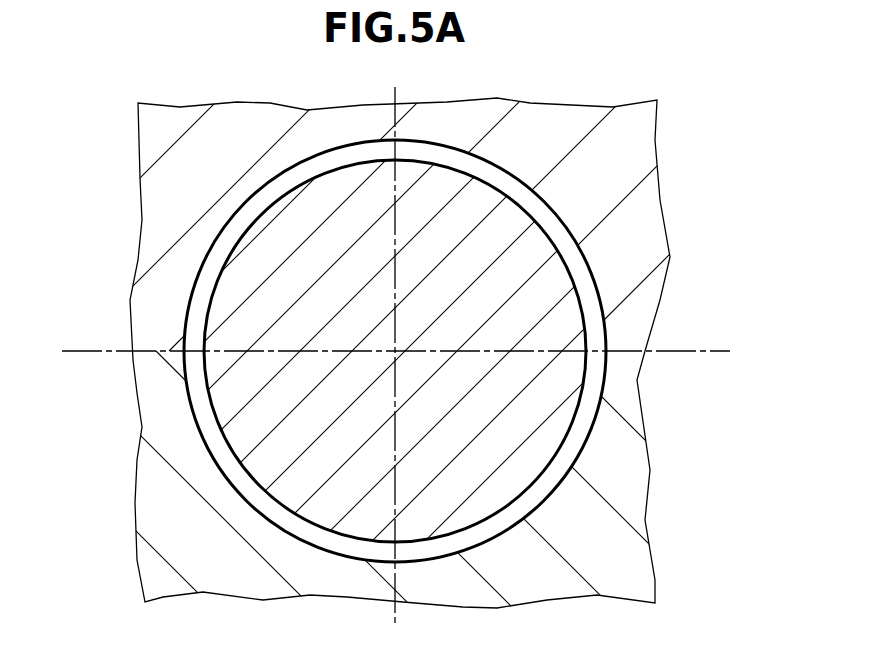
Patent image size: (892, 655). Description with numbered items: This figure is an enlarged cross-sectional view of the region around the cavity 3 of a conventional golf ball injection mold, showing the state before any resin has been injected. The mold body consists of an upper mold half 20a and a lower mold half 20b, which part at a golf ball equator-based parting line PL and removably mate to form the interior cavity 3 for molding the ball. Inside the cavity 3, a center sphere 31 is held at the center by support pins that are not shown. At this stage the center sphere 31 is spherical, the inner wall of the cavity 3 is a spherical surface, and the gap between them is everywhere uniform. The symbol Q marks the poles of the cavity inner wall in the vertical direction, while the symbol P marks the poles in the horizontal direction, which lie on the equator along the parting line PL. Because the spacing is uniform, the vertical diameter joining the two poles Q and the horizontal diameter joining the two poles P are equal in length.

The upper mold half 20a is at (600, 157).
The lower mold half 20b is at (598, 550).
The interior cavity 3 is at (583, 418).
The center sphere 31 is at (538, 445).
The poles in a horizontal direction P is at (190, 345).
The poles in a vertical direction Q is at (392, 140).
The parting line PL is at (110, 349).